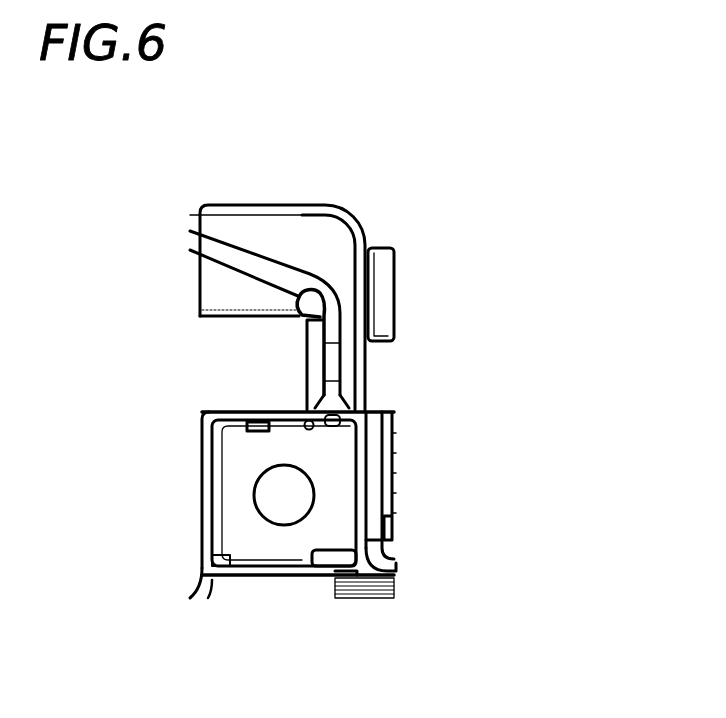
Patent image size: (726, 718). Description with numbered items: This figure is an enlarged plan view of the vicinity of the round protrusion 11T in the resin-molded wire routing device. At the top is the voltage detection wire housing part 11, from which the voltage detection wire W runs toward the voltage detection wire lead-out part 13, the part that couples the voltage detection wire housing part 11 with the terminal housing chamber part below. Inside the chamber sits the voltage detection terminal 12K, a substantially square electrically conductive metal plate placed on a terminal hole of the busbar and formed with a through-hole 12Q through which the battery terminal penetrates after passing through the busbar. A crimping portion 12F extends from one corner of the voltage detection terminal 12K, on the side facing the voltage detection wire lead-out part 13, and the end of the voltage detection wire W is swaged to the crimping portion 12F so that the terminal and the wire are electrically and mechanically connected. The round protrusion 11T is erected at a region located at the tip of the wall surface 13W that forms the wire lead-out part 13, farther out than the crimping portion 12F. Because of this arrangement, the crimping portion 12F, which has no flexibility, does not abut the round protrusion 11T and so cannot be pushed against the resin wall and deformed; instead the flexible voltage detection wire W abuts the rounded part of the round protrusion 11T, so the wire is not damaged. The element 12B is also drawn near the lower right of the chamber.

The voltage detection wire housing part 11 is at (275, 223).
The round protrusion 11T is at (303, 298).
The voltage detection wire W is at (327, 290).
The voltage detection wire lead-out part 13 is at (292, 320).
The crimping portion 12F is at (333, 358).
The wall surface 13W is at (303, 383).
The voltage detection terminal 12K is at (288, 548).
The through-hole 12Q is at (253, 500).
The bottom hook portion 12B is at (382, 567).